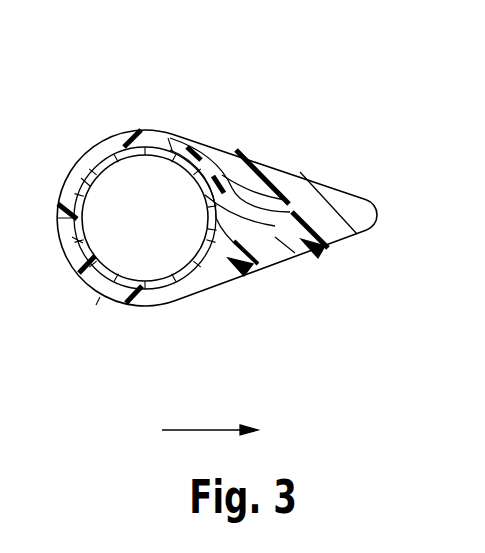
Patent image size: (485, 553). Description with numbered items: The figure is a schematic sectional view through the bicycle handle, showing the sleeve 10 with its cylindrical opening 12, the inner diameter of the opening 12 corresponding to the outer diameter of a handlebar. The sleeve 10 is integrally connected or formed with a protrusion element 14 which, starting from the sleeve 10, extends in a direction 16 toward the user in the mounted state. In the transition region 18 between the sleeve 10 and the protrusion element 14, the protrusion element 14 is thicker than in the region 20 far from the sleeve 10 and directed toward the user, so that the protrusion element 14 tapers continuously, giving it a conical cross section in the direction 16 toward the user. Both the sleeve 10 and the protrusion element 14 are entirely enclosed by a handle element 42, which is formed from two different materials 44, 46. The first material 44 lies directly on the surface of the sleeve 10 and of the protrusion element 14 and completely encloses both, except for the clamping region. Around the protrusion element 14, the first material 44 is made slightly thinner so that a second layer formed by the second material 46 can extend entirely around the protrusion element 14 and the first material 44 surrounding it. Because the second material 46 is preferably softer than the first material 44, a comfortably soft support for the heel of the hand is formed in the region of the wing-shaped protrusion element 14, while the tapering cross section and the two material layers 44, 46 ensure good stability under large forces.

The sleeve 10 is at (62, 210).
The cylindrical opening 12 is at (128, 227).
The protrusion element 14 is at (277, 187).
The direction 16 is at (186, 430).
The transition region 18 is at (248, 270).
The region far from the sleeve 20 is at (315, 249).
The handle element 42 is at (216, 81).
The first material 44 is at (92, 157).
The second material 46 is at (334, 203).